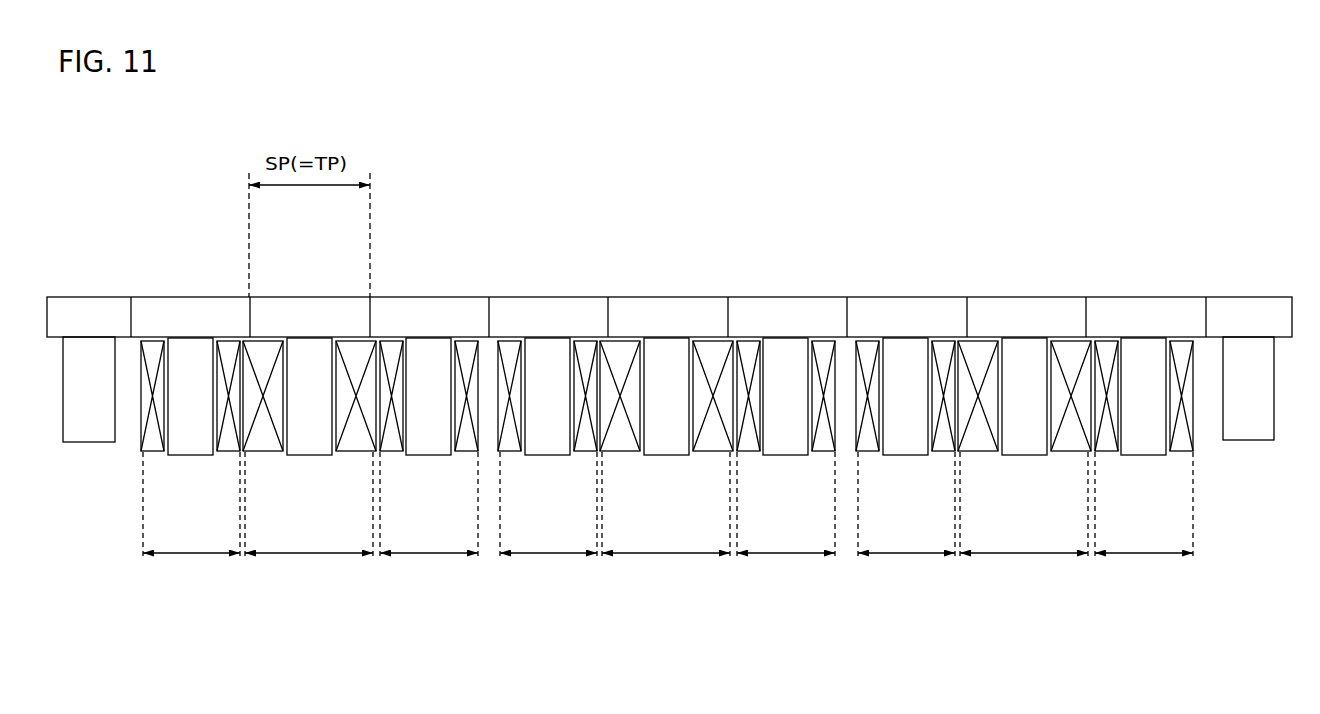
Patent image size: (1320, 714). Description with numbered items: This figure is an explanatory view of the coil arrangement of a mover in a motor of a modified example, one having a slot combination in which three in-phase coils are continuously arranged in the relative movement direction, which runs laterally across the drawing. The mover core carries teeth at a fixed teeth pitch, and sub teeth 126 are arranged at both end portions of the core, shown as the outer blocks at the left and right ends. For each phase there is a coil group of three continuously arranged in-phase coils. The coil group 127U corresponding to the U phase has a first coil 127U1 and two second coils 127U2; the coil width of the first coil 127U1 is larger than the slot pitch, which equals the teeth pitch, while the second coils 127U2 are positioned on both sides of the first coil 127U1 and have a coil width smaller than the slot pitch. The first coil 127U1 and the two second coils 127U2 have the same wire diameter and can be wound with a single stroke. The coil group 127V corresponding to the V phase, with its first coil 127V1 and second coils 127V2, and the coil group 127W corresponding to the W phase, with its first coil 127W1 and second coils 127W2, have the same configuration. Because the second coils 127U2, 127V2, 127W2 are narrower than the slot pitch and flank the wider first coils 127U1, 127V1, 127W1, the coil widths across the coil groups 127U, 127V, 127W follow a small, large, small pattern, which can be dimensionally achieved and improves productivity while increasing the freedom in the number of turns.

The sub teeth 126 is at (90, 308).
The coil group corresponding to the U phase 127U is at (309, 510).
The first coil 127U1 is at (352, 452).
The second coils 127U2 is at (227, 452).
The coil group corresponding to the V phase 127V is at (666, 510).
The first coil 127V1 is at (666, 478).
The second coils 127V2 is at (666, 478).
The coil group corresponding to the W phase 127W is at (1024, 510).
The first coil 127W1 is at (1024, 478).
The second coils 127W2 is at (1024, 478).